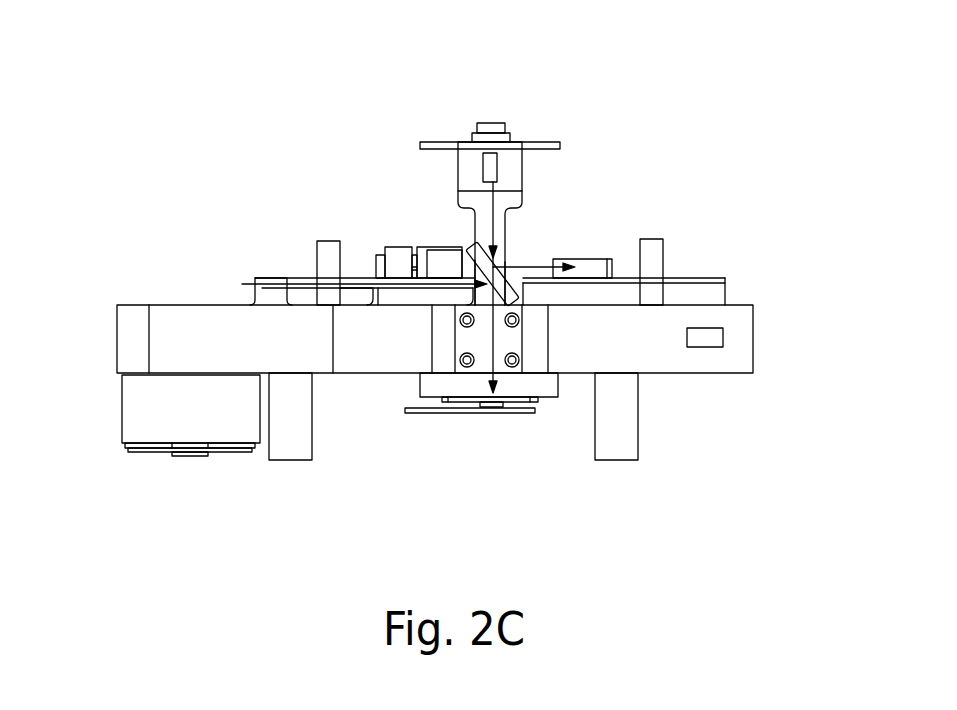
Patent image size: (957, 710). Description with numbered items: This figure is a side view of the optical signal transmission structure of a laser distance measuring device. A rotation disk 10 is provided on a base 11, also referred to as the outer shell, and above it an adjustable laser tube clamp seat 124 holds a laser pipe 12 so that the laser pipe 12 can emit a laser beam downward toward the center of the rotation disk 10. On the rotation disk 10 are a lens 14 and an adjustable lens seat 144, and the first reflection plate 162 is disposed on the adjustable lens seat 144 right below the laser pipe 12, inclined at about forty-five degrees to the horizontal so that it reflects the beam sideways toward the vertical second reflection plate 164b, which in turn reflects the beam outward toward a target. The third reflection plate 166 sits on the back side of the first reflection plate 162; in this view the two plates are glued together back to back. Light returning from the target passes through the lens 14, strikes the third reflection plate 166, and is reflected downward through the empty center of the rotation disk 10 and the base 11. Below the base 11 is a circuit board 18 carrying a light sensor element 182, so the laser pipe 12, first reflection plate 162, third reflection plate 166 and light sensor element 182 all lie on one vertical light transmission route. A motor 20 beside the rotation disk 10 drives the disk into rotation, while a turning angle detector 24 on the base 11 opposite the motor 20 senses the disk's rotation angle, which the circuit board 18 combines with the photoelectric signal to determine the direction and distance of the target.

The rotation disk 10 is at (270, 277).
The base 11 is at (738, 338).
The laser pipe 12 is at (493, 160).
The adjustable laser tube clamp seat 124 is at (487, 123).
The lens 14 is at (400, 265).
The adjustable lens seat 144 is at (442, 253).
The second reflection plate 164b is at (585, 262).
The third reflection plate 166 is at (477, 268).
The first reflection plate 162 is at (518, 293).
The circuit board 18 is at (465, 412).
The light sensor element 182 is at (497, 407).
The motor 20 is at (130, 413).
The turning angle detector 24 is at (712, 332).